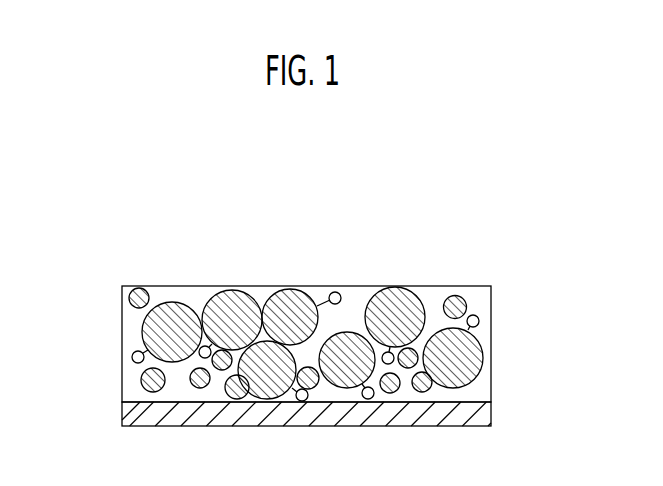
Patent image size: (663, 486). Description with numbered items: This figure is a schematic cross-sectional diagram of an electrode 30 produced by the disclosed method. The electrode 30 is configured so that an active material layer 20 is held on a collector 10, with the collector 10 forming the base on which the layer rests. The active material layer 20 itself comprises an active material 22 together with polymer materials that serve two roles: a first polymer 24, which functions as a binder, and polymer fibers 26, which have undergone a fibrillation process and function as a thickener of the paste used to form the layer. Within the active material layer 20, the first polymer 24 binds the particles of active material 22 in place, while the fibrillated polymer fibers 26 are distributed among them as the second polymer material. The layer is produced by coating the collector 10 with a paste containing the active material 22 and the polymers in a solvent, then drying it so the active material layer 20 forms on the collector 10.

The collector 10 is at (480, 412).
The active material layer 20 is at (458, 282).
The active material 22 is at (483, 353).
The first polymer 24 is at (141, 388).
The polymer fibers 26 is at (132, 354).
The electrode 30 is at (120, 263).